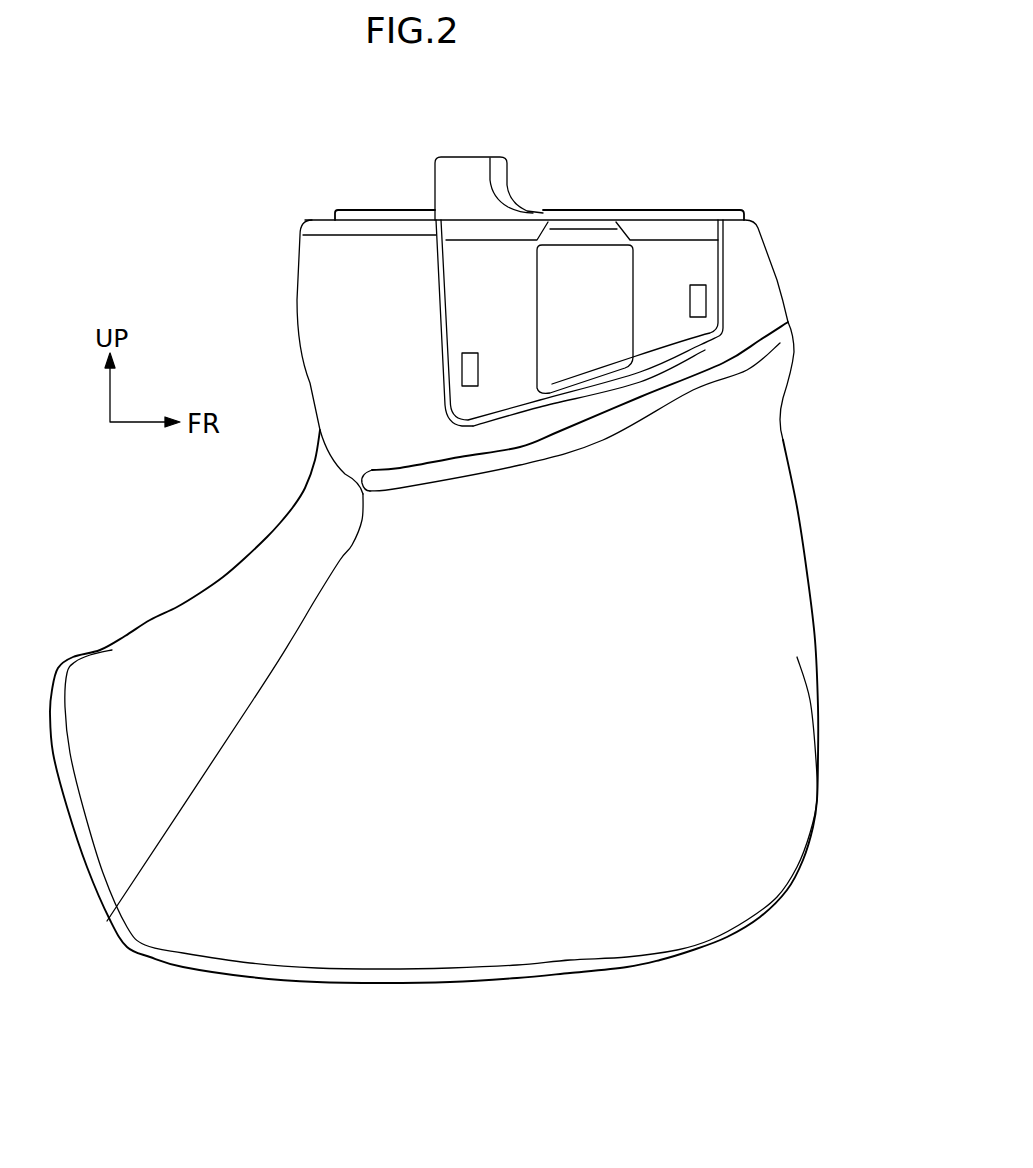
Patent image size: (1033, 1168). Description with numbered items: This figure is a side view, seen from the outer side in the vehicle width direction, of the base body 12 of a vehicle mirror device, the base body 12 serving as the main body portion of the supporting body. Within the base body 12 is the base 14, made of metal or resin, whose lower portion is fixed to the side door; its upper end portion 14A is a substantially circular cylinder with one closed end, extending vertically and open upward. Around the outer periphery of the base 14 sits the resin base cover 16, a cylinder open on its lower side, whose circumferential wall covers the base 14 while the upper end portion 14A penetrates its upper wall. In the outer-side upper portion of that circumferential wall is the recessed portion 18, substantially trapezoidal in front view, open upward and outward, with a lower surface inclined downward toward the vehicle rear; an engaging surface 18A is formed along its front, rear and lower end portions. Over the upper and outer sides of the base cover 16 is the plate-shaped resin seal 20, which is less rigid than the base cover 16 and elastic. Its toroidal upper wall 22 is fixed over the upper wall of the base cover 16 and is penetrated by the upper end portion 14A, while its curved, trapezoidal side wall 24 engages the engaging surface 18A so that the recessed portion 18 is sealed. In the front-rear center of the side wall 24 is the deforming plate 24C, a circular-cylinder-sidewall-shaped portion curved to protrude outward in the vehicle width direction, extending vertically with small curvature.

The base body 12 is at (208, 256).
The base 14 is at (438, 166).
The upper end portion 14A is at (437, 158).
The base cover 16 is at (151, 622).
The recessed portion 18 is at (442, 313).
The engaging surface 18A is at (457, 420).
The seal 20 is at (441, 275).
The upper wall 22 is at (670, 210).
The side wall 24 is at (446, 353).
The deforming plate 24C is at (582, 362).